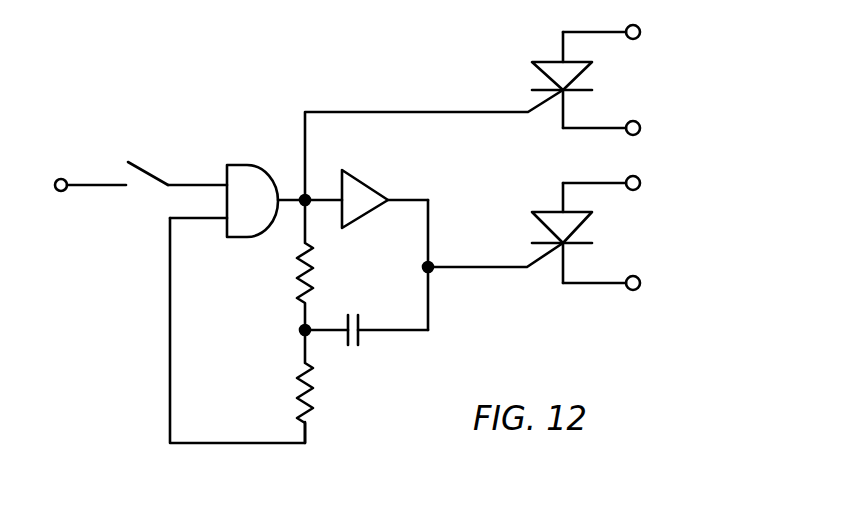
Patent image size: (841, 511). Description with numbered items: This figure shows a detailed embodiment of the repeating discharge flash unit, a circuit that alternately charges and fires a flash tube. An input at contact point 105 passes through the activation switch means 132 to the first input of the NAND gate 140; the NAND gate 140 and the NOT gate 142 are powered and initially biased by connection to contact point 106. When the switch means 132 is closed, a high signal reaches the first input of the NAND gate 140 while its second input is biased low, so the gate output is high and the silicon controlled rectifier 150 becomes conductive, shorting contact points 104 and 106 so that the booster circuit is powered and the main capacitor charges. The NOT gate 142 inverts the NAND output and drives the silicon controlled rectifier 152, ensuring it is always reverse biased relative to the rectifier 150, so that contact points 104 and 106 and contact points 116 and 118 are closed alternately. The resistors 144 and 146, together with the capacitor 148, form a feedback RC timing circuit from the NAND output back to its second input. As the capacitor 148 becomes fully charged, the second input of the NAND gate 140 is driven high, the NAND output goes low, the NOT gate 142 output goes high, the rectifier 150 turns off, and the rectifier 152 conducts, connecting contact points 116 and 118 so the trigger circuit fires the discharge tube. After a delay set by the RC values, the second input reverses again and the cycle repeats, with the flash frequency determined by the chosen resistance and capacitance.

The contact point 105 is at (67, 178).
The activation means 132 is at (148, 171).
The NAND gate 140 is at (248, 165).
The NOT gate 142 is at (368, 180).
The resistor 144 is at (302, 280).
The resistor 146 is at (300, 385).
The capacitor 148 is at (363, 337).
The silicon controlled rectifier 150 is at (585, 72).
The silicon controlled rectifier 152 is at (585, 222).
The contact point 104 is at (640, 32).
The contact point 106 is at (640, 128).
The contact point 116 is at (640, 183).
The contact point 118 is at (640, 283).